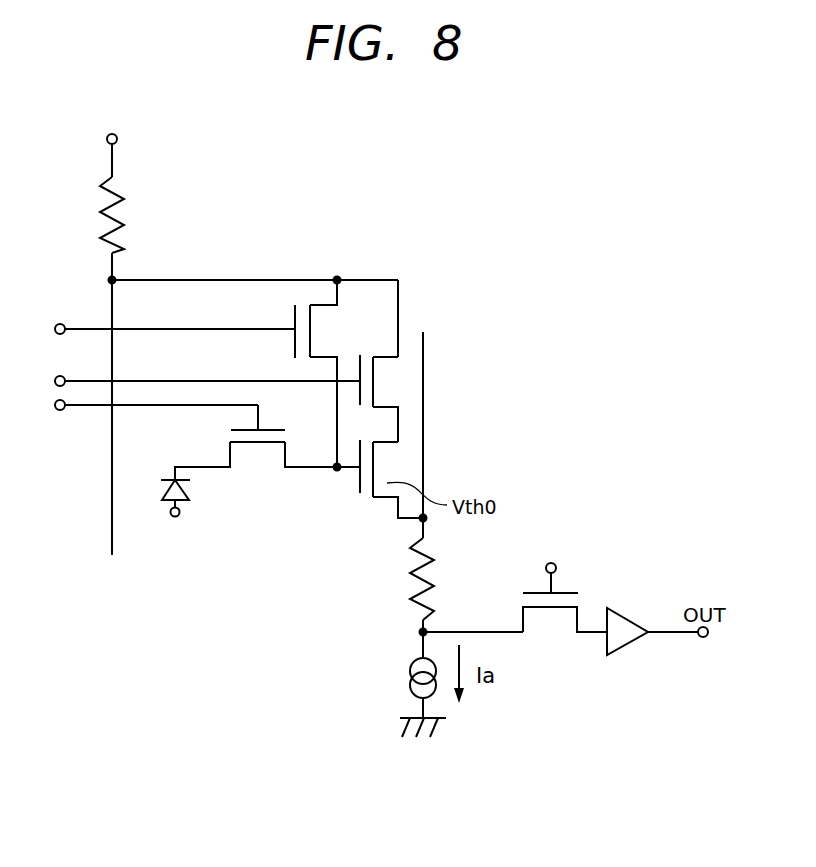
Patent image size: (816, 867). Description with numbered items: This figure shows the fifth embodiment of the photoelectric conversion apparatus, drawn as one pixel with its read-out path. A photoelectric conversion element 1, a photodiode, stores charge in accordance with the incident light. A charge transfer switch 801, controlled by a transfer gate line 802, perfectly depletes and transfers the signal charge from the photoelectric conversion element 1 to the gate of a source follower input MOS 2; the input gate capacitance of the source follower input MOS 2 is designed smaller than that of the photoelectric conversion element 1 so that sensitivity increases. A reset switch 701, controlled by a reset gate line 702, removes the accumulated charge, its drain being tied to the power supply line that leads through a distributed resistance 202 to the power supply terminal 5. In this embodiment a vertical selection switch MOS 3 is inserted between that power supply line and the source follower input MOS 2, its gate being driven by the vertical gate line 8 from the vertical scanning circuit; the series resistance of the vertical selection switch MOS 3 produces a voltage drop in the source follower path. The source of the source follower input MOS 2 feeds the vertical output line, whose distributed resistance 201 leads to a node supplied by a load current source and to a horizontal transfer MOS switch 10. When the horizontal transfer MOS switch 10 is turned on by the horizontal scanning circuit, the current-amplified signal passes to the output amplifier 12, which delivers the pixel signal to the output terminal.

The power supply terminal 5 is at (108, 136).
The resistance 202 is at (107, 205).
The transfer gate line 802 is at (177, 330).
The vertical gate line 8 is at (145, 382).
The reset gate line 702 is at (82, 408).
The reset switch 701 is at (330, 332).
The vertical selection switch MOS 3 is at (390, 378).
The source follower input MOS 2 is at (390, 468).
The charge transfer switch 801 is at (260, 460).
The photoelectric conversion element 1 is at (162, 497).
The resistance 201 is at (410, 582).
The horizontal transfer MOS switch 10 is at (568, 593).
The output amplifier 12 is at (627, 643).